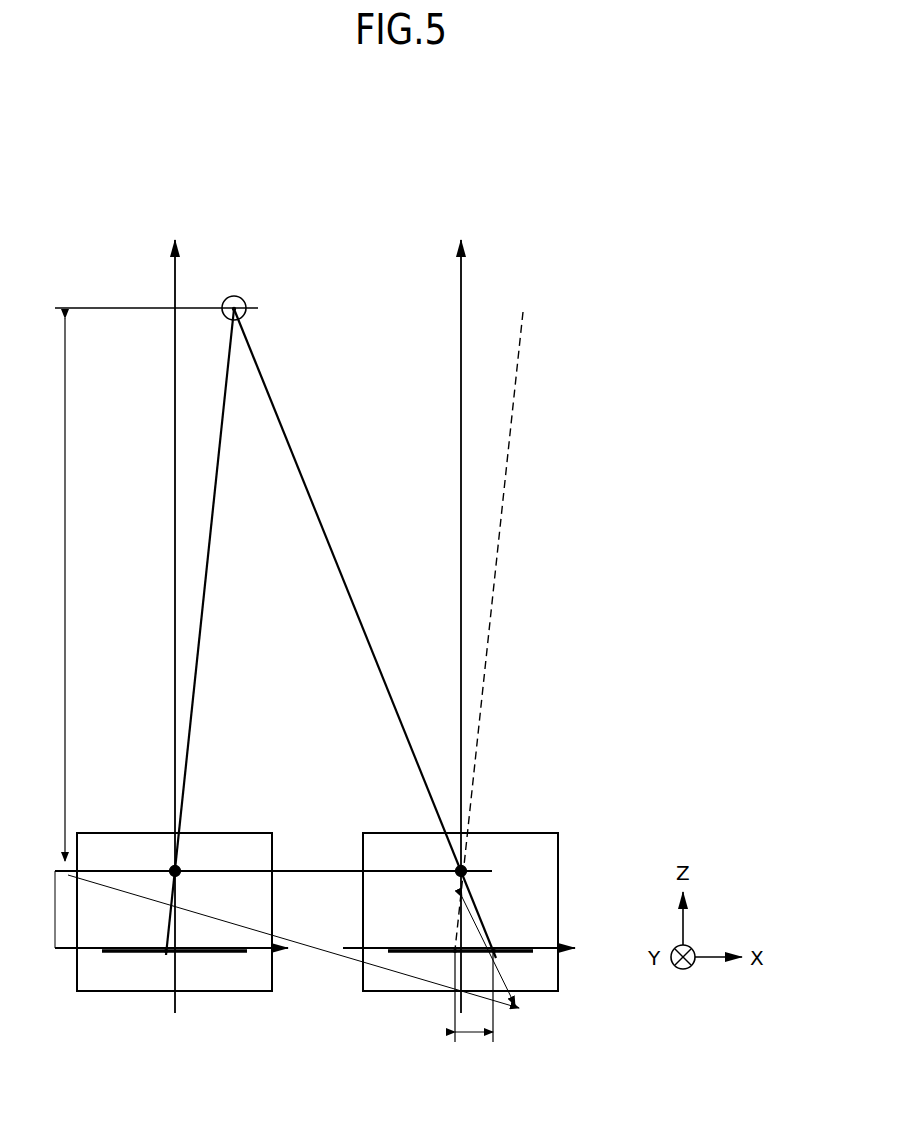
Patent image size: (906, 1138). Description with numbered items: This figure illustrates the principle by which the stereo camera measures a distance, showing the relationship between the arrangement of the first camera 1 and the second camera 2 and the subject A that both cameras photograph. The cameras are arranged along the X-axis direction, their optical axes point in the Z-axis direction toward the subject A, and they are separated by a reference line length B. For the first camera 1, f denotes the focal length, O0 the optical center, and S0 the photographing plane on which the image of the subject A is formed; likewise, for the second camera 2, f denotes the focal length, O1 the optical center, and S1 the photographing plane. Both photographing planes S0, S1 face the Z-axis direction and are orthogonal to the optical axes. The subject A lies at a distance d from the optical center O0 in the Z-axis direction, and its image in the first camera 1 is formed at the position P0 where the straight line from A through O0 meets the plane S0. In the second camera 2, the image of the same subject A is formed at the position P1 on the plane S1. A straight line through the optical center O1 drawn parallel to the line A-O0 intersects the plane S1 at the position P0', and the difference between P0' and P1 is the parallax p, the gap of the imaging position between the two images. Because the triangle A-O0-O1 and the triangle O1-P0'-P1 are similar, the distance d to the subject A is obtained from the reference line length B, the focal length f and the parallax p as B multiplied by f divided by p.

The first camera 1 is at (171, 905).
The second camera 2 is at (459, 920).
The subject A is at (234, 292).
The reference line length B is at (273, 897).
The distance d is at (52, 589).
The focal length f is at (49, 909).
The optical center O0 is at (191, 860).
The optical center O1 is at (479, 860).
The photographing plane S0 is at (171, 937).
The photographing plane S1 is at (459, 937).
The position P0 is at (149, 988).
The position P0' is at (437, 988).
The position P1 is at (495, 957).
The parallax p is at (474, 1003).